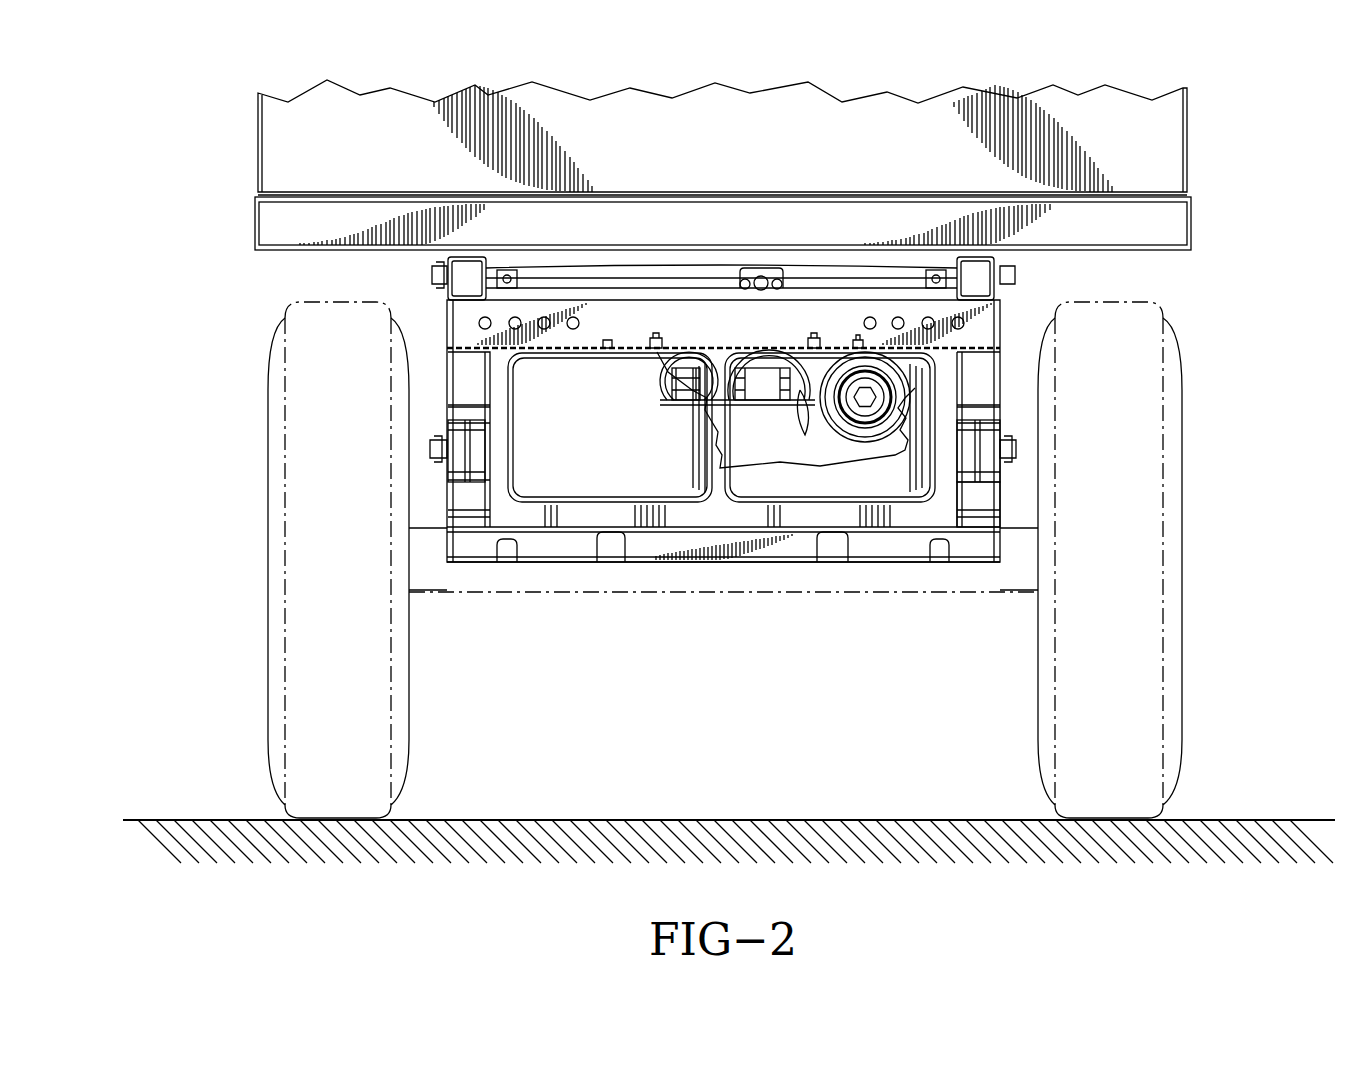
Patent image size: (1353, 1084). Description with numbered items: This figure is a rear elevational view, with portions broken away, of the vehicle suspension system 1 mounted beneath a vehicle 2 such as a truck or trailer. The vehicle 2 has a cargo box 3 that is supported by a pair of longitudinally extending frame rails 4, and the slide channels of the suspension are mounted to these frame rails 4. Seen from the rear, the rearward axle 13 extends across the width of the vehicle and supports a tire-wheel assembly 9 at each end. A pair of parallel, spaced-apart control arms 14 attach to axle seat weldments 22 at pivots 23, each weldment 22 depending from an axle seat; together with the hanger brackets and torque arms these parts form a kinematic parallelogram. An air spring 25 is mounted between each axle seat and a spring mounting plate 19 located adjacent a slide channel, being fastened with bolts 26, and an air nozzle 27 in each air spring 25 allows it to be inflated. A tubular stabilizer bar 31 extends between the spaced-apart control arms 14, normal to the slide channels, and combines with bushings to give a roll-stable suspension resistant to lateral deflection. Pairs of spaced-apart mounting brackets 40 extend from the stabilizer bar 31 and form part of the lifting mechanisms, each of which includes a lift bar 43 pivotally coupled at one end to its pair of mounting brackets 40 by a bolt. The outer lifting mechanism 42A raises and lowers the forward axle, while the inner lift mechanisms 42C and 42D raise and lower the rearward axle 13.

The vehicle suspension system 1 is at (720, 612).
The vehicle 2 is at (1200, 119).
The cargo box 3 is at (1168, 167).
The frame rails 4 is at (1005, 295).
The tire-wheel assembly 9 is at (1183, 437).
The rearward axle 13 is at (975, 593).
The control arms 14 is at (1003, 420).
The spring mounting plate 19 is at (588, 348).
The axle seat weldment 22 is at (1003, 498).
The pivot 23 is at (1016, 447).
The air spring 25 is at (587, 487).
The bolts 26 is at (858, 340).
The air nozzle 27 is at (812, 338).
The tubular stabilizer bar 31 is at (735, 445).
The mounting brackets 40 is at (740, 372).
The outer lifting mechanism 42A is at (918, 378).
The inner lift mechanism 42C is at (787, 356).
The inner lift mechanism 42D is at (700, 348).
The lift bar 43 is at (770, 392).